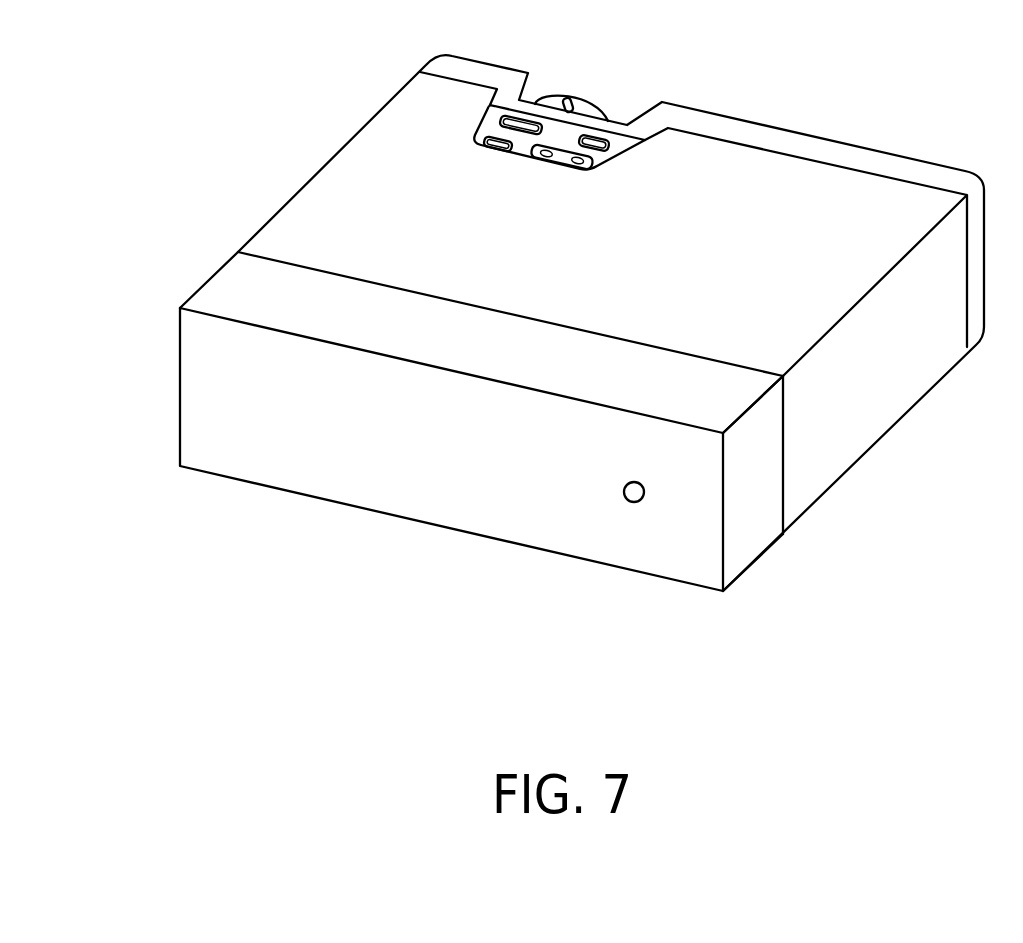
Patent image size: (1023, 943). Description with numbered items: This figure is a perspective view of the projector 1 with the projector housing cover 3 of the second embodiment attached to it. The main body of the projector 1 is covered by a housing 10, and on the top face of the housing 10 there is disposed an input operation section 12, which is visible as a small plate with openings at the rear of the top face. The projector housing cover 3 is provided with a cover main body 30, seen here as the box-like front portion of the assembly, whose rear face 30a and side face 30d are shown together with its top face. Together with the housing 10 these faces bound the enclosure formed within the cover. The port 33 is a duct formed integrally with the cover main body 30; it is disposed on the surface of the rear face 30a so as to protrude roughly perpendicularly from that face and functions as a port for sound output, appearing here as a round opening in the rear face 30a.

The projector 1 is at (580, 330).
The housing 10 is at (611, 323).
The input operation section 12 is at (607, 157).
The cover main body 30 is at (517, 414).
The projector housing cover 3 is at (451, 449).
The rear face 30a is at (468, 508).
The port 33 is at (625, 493).
The side face 30d is at (747, 538).